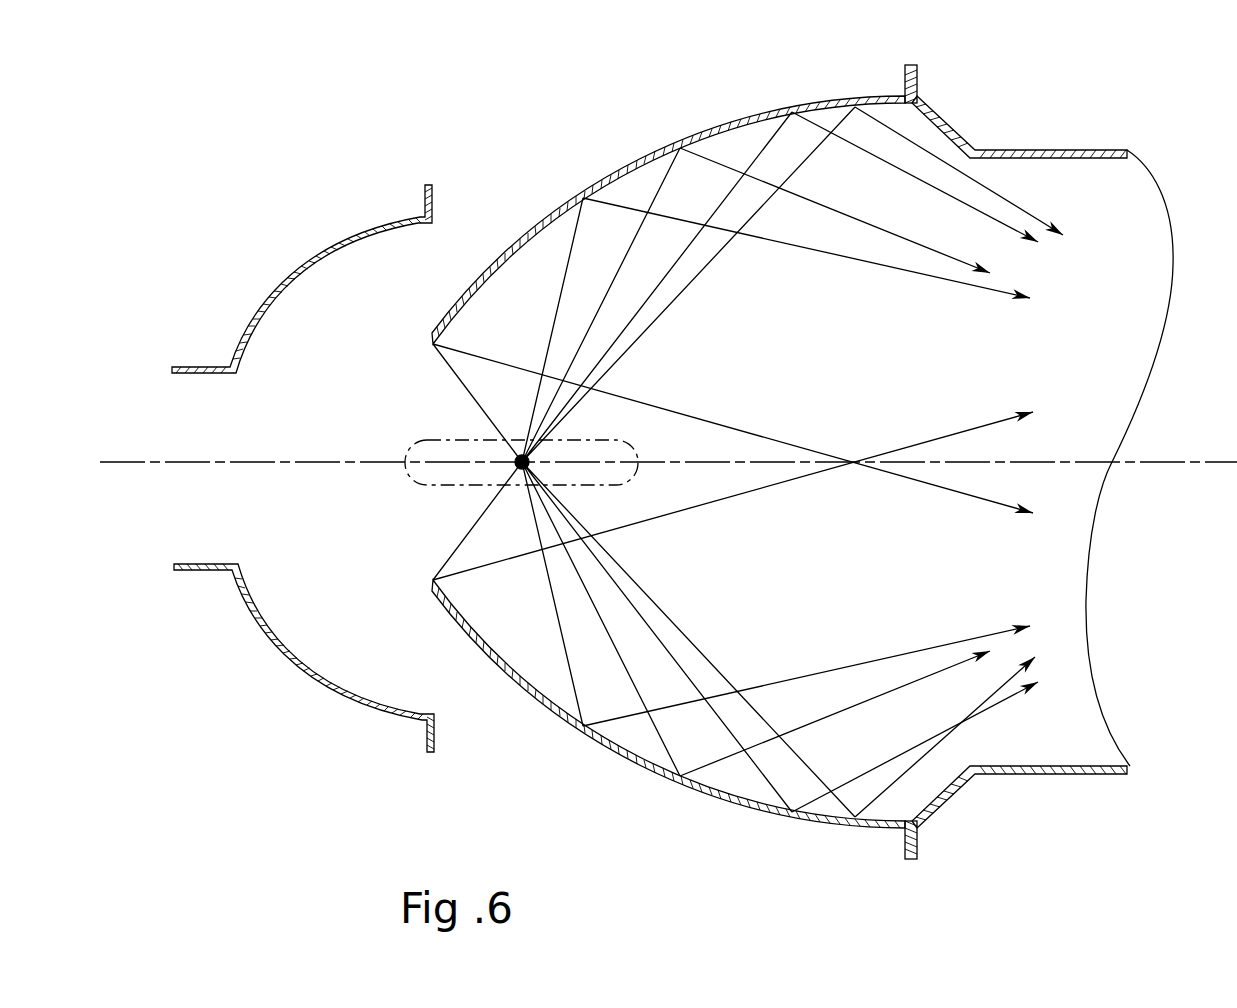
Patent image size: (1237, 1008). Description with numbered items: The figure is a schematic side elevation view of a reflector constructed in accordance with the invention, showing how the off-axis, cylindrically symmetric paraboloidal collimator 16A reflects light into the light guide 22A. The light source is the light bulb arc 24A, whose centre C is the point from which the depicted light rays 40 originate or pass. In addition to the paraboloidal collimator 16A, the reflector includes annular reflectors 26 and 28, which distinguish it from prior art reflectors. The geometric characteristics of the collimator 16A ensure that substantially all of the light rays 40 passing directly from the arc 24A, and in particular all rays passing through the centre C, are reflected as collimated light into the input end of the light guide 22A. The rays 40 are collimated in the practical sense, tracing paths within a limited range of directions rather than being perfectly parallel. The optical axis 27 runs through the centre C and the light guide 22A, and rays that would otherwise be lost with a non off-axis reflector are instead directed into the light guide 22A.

The paraboloidal collimator 16A is at (633, 162).
The light guide 22A is at (1085, 150).
The light bulb arc 24A is at (445, 487).
The annular reflector 26 is at (330, 212).
The optical axis 27 is at (1158, 461).
The annular reflector 28 is at (953, 128).
The light rays 40 is at (1030, 210).
The centre of the light source C is at (512, 460).